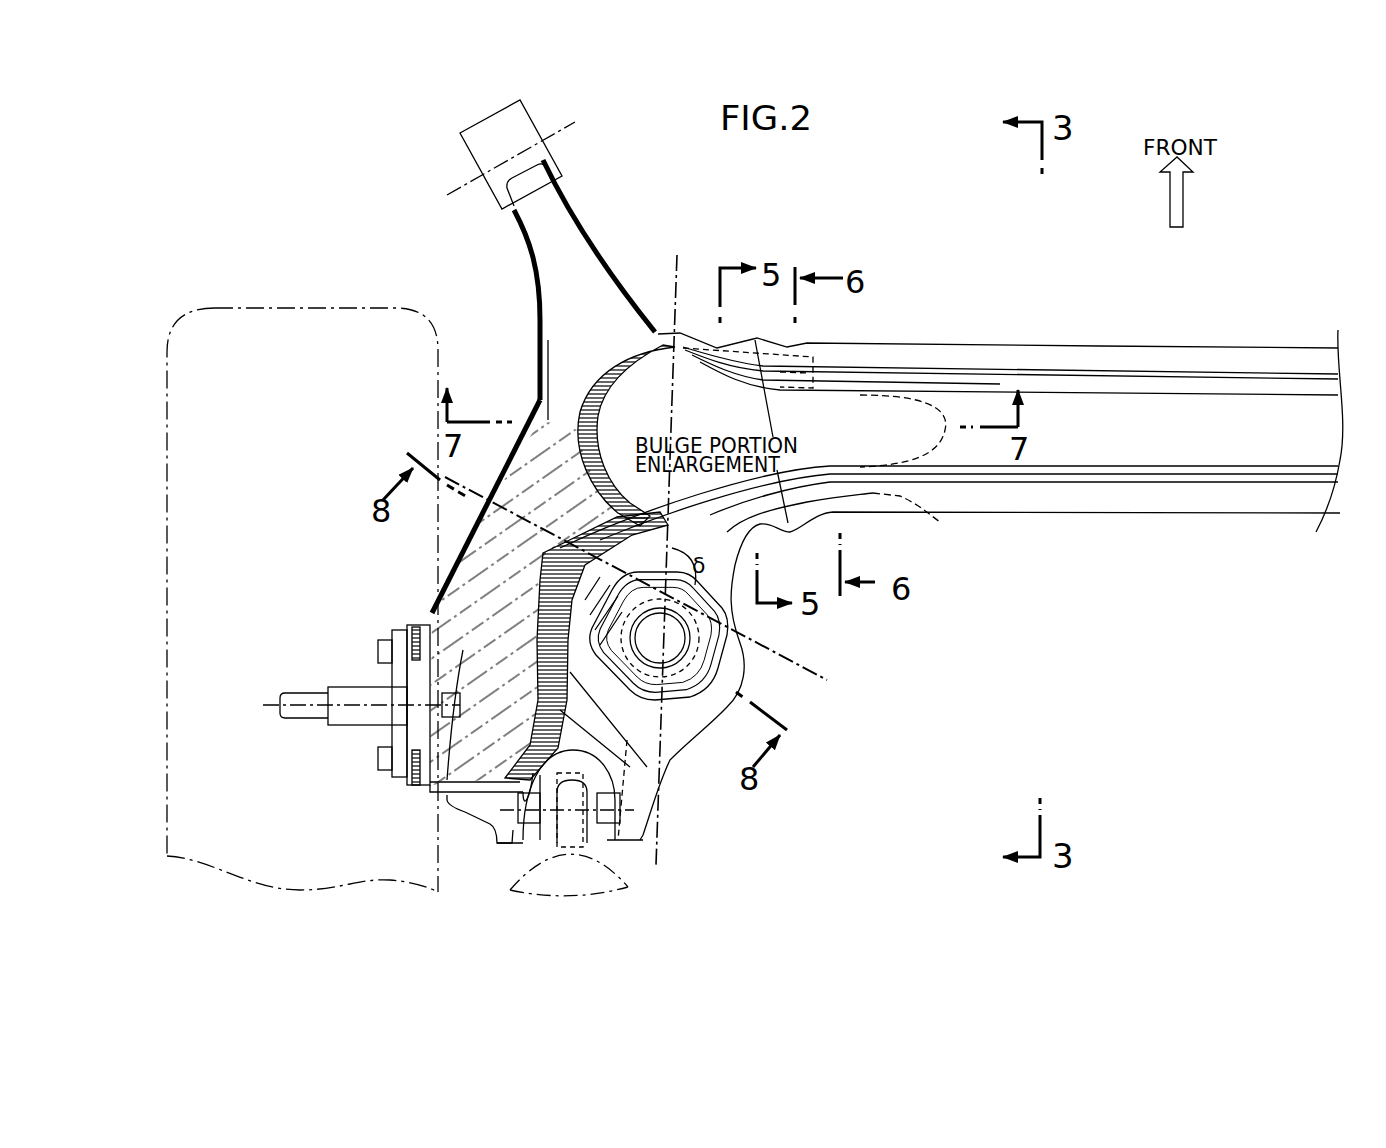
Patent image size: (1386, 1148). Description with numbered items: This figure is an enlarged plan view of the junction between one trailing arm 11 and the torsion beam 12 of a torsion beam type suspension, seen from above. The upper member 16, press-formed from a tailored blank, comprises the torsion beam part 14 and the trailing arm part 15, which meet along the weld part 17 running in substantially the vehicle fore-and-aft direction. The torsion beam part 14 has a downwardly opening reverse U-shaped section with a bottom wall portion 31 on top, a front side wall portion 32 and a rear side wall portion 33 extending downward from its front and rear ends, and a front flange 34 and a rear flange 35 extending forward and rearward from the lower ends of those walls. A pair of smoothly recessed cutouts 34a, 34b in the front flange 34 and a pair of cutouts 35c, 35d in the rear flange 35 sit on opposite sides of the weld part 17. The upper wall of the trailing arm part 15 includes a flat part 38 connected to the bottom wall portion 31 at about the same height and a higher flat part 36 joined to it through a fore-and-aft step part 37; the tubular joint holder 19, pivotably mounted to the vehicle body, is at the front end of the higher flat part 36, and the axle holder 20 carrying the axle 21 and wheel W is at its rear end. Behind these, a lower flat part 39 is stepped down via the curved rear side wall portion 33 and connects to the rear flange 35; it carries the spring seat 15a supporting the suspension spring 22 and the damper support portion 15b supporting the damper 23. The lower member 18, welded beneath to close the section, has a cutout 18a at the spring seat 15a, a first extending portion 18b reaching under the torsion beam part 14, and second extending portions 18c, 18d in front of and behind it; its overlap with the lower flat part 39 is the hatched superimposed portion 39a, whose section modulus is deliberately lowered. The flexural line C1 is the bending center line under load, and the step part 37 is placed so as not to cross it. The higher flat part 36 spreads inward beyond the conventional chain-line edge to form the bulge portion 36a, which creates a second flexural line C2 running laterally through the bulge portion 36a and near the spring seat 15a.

The trailing arm 11 is at (517, 372).
The torsion beam 12 is at (1210, 308).
The torsion beam part 14 is at (1232, 517).
The trailing arm part 15 is at (455, 568).
The spring seat 15a is at (683, 668).
The damper support portion 15b is at (512, 847).
The upper member 16 is at (1230, 410).
The weld part 17 is at (765, 403).
The lower member 18 is at (638, 788).
The cutout 18a is at (603, 719).
The first extending portion 18b is at (953, 398).
The second extending portion 18c is at (778, 340).
The second extending portion 18d is at (908, 508).
The joint holder 19 is at (477, 152).
The axle holder 20 is at (410, 736).
The axle 21 is at (300, 717).
The suspension spring 22 is at (720, 660).
The damper 23 is at (628, 886).
The bottom wall portion 31 is at (1280, 455).
The front side wall portion 32 is at (645, 318).
The rear side wall portion 33 is at (543, 558).
The front flange 34 is at (1050, 355).
The cutout 34a is at (806, 345).
The cutout 34b is at (718, 347).
The rear flange 35 is at (1078, 496).
The cutout 35c is at (833, 513).
The cutout 35d is at (755, 535).
The higher flat part 36 is at (543, 462).
The bulge portion 36a is at (520, 472).
The step part 37 is at (614, 386).
The flat part 38 is at (636, 433).
The lower flat part 39 is at (619, 731).
The superimposed portion 39a is at (652, 522).
The wheel W is at (318, 305).
The flexural line C1 is at (668, 857).
The flexural line C2 is at (830, 668).